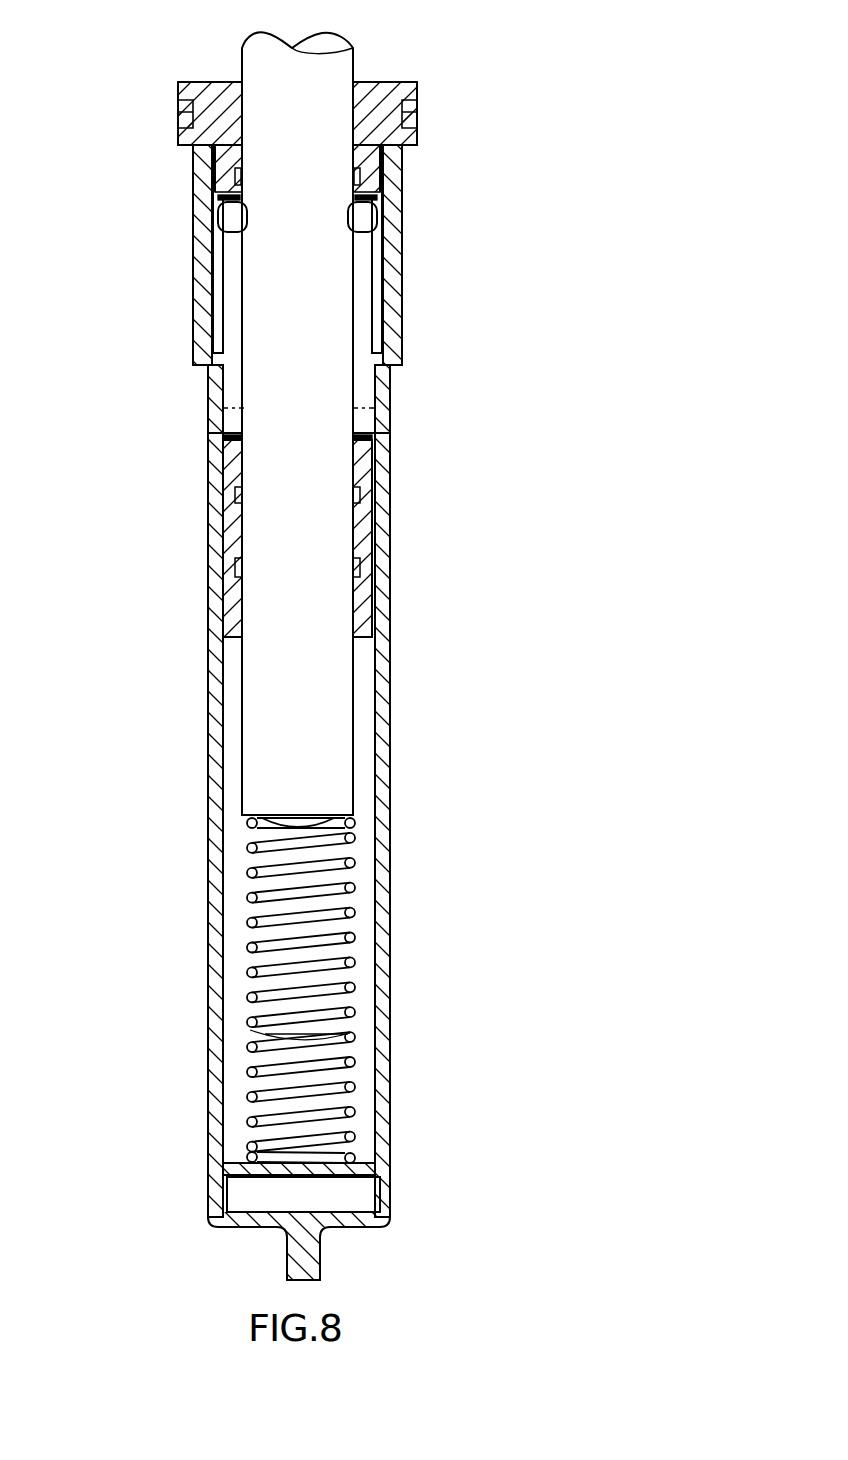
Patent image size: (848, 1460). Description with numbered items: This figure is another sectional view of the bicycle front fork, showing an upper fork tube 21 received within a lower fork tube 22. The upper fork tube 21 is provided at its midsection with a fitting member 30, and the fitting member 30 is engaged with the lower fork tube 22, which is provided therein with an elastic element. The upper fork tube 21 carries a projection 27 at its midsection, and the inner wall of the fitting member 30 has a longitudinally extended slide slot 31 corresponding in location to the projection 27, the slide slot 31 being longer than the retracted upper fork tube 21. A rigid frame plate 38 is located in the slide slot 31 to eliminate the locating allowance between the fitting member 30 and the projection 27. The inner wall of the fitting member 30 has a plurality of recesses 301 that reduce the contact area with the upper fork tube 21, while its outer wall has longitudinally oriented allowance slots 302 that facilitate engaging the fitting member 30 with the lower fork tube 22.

The upper fork tube 21 is at (257, 65).
The lower fork tube 22 is at (385, 867).
The projection 27 is at (232, 212).
The fitting member 30 is at (373, 248).
The recesses 301 is at (357, 173).
The allowance slots 302 is at (390, 315).
The slide slot 31 is at (230, 365).
The rigid frame plate 38 is at (208, 435).